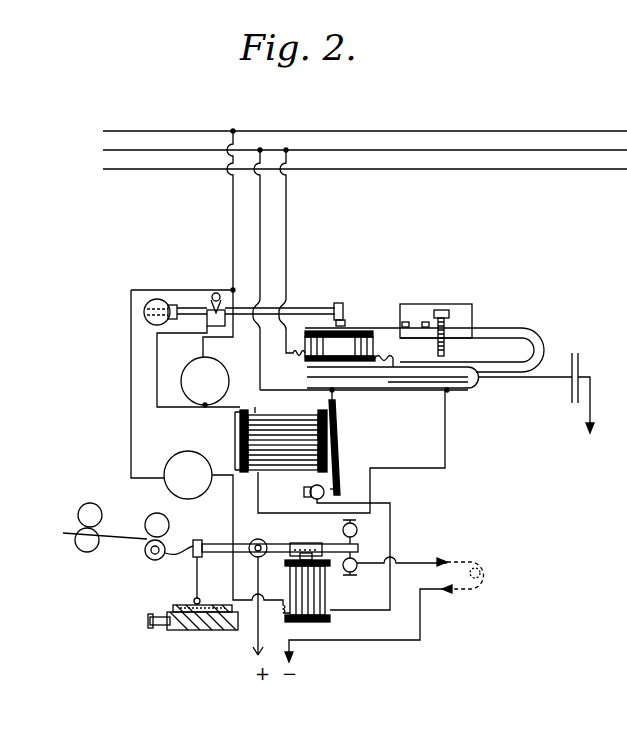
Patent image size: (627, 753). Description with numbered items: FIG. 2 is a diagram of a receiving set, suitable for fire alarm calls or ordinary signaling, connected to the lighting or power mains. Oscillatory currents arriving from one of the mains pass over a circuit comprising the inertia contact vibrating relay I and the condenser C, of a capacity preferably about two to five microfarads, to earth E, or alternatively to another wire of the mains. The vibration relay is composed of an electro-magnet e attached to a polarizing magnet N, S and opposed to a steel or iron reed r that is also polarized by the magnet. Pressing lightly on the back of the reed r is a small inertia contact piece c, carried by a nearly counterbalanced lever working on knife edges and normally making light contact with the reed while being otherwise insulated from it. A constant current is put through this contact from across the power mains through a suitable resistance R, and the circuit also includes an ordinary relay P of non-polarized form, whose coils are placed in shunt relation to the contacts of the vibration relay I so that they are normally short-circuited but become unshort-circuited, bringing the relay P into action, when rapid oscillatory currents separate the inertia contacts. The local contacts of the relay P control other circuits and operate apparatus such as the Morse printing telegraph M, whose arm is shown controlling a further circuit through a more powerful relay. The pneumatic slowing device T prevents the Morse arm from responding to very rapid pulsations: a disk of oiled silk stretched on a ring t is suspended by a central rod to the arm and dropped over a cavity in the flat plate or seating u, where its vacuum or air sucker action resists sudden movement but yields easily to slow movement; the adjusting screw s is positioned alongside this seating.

The inertia contact piece c is at (340, 304).
The reed r is at (389, 311).
The electro-magnet e is at (362, 332).
The polarizing magnet N is at (310, 368).
The polarizing magnet S is at (472, 338).
The inertia contact vibrating relay I is at (427, 405).
The condenser C is at (568, 391).
The earth E is at (587, 447).
The ordinary relay P is at (320, 423).
The resistance R is at (196, 428).
The ring t is at (176, 607).
The pneumatic slowing device T is at (202, 594).
The adjusting screw s is at (165, 621).
The flat plate or seating u is at (174, 630).
The Morse printing telegraph M is at (325, 596).